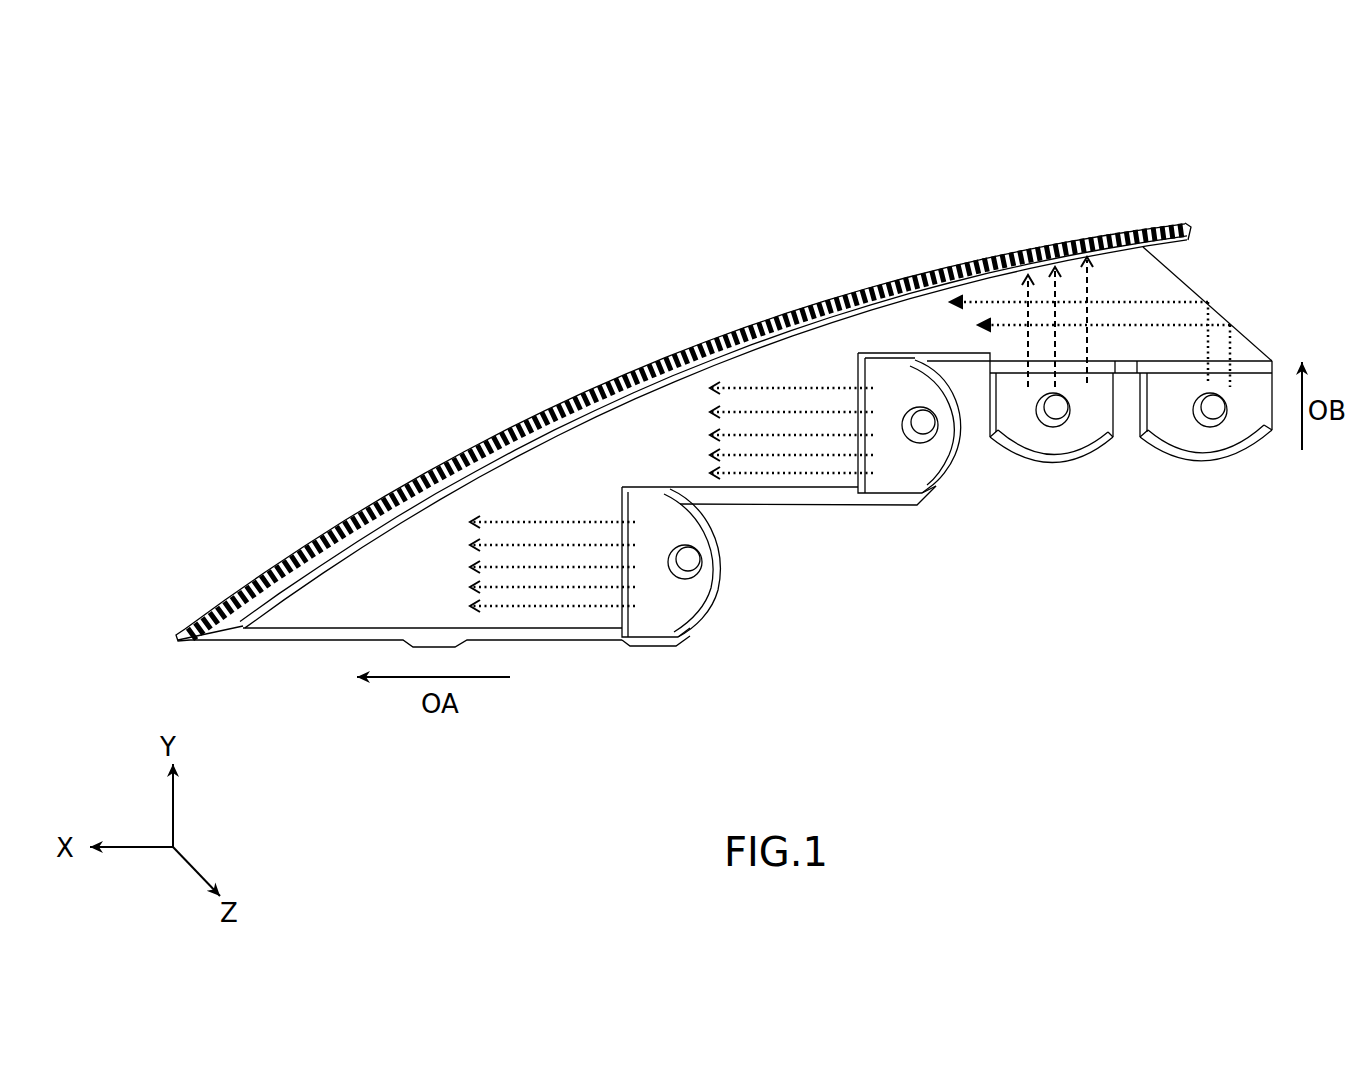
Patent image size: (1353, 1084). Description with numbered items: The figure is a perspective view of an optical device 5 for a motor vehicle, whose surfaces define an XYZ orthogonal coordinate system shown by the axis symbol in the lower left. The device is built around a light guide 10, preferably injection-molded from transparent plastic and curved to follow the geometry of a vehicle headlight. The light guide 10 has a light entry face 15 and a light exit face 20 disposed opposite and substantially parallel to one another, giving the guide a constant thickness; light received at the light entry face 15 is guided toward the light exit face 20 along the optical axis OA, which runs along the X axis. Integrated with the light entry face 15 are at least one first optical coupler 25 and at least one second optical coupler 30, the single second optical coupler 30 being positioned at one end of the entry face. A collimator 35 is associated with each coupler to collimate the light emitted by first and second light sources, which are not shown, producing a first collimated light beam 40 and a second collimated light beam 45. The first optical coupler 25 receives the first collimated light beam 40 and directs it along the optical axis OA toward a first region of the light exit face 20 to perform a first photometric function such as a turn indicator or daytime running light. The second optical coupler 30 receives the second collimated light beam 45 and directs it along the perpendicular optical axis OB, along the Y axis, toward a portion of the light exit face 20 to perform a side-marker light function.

The optical device 5 is at (478, 265).
The light guide 10 is at (1183, 273).
The light entry face 15 is at (818, 500).
The light exit face 20 is at (395, 481).
The first optical coupler 25 is at (678, 638).
The second optical coupler 30 is at (1247, 443).
The collimator 35 is at (693, 560).
The first collimated light beam 40 is at (537, 515).
The second collimated light beam 45 is at (1082, 287).